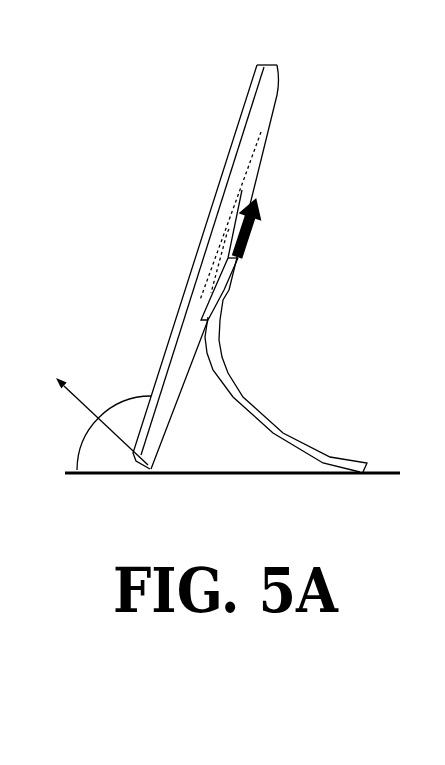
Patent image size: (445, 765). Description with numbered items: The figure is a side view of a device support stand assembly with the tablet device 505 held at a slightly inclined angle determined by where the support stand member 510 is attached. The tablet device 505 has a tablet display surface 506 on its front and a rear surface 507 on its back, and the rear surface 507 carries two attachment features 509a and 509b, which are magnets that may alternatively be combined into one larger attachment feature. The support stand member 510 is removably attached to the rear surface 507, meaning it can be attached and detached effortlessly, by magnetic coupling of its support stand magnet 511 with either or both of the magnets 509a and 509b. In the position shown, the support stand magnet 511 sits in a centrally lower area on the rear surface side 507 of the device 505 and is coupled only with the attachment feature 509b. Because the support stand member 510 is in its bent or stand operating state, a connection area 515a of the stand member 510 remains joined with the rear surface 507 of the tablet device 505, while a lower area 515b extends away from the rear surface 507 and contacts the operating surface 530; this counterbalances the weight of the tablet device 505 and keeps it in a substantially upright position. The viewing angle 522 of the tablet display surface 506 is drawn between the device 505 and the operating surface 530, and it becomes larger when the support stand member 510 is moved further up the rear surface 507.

The tablet device 505 is at (218, 244).
The tablet display surface 506 is at (219, 134).
The rear surface 507 is at (281, 130).
The attachment feature 509a is at (238, 196).
The attachment feature 509b is at (224, 243).
The support stand member 510 is at (286, 381).
The support stand magnet 511 is at (230, 283).
The connection area 515a is at (238, 318).
The lower area 515b is at (283, 405).
The viewing angle 522 is at (117, 404).
The operating surface 530 is at (199, 460).